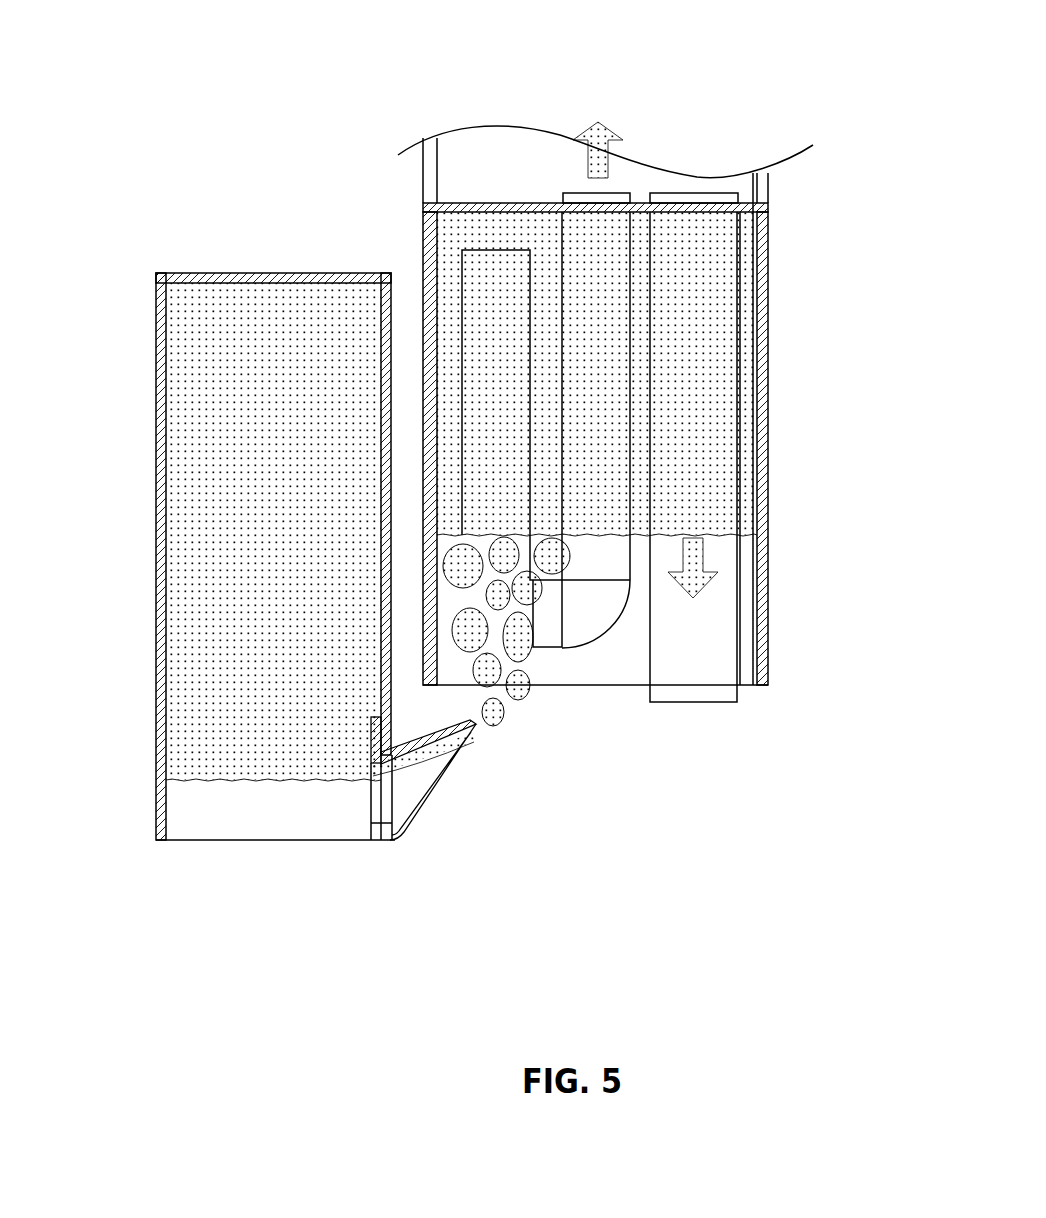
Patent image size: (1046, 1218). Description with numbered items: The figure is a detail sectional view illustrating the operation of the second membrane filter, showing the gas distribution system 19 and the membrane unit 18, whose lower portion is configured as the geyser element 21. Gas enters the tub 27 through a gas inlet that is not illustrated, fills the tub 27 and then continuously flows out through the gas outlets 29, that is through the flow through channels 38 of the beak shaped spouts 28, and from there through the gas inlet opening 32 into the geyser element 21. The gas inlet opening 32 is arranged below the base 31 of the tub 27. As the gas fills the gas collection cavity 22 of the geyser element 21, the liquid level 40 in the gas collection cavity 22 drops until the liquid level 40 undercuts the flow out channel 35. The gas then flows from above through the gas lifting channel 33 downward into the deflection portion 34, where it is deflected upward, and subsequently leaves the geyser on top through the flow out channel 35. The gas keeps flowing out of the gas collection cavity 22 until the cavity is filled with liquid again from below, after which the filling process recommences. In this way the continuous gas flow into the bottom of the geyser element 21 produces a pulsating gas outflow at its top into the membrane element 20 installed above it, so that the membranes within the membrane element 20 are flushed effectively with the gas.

The membrane unit 18 is at (794, 286).
The gas distribution system 19 is at (163, 229).
The membrane element 20 is at (542, 152).
The geyser element 21 is at (595, 411).
The gas collection cavity 22 is at (453, 233).
The tub 27 is at (258, 822).
The beak shaped spouts 28 is at (440, 738).
The gas outlets 29 is at (387, 851).
The base 31 is at (212, 278).
The gas inlet opening 32 is at (603, 687).
The gas lifting channel 33 is at (512, 395).
The deflection portion 34 is at (553, 600).
The flow out channel 35 is at (607, 190).
The flow through channels 38 is at (417, 780).
The liquid level 40 is at (697, 533).